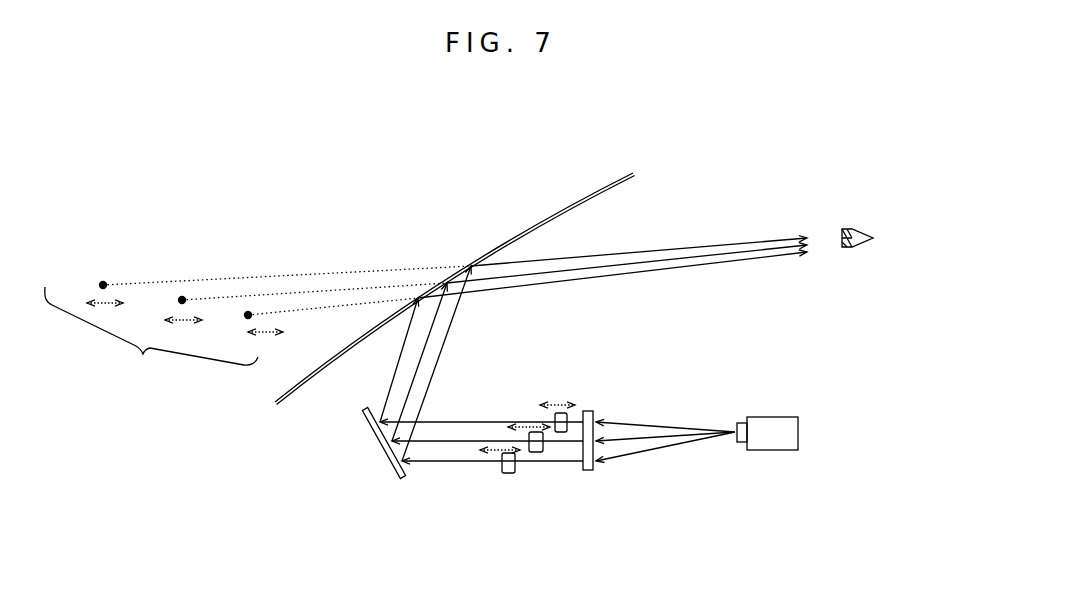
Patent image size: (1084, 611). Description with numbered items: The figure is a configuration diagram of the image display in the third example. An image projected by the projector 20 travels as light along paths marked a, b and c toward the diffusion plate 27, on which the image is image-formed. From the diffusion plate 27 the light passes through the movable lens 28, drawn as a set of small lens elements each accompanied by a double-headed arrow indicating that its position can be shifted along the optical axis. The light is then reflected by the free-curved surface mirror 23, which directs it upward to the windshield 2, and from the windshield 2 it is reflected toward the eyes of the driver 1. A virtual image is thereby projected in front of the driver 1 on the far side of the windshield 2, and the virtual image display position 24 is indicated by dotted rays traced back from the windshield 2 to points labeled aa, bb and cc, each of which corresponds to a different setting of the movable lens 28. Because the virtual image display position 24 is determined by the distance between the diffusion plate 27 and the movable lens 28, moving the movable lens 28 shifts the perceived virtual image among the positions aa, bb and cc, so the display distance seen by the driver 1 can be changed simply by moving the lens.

The driver 1 is at (898, 225).
The windshield 2 is at (469, 289).
The projector 20 is at (787, 465).
The free-curved surface mirror 23 is at (372, 460).
The virtual image display position 24 is at (258, 328).
The diffusion plate 27 is at (607, 481).
The movable lens 28 is at (527, 477).
The light beam a is at (665, 405).
The light beam b is at (665, 421).
The light beam c is at (665, 467).
The virtual image aa is at (316, 316).
The virtual image bb is at (296, 303).
The virtual image cc is at (268, 286).